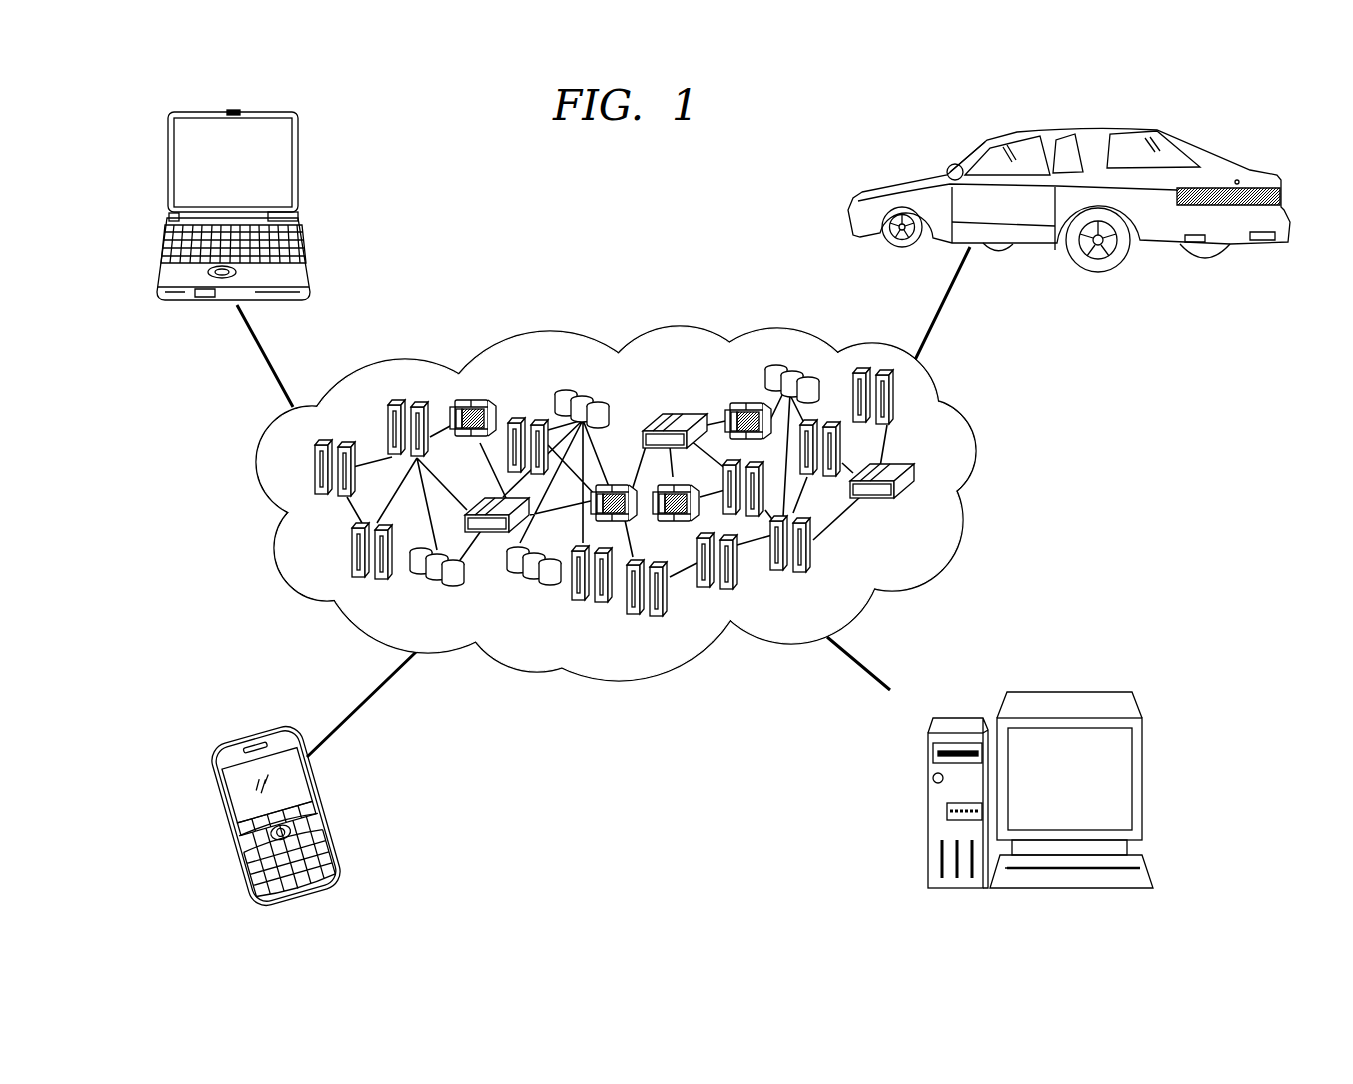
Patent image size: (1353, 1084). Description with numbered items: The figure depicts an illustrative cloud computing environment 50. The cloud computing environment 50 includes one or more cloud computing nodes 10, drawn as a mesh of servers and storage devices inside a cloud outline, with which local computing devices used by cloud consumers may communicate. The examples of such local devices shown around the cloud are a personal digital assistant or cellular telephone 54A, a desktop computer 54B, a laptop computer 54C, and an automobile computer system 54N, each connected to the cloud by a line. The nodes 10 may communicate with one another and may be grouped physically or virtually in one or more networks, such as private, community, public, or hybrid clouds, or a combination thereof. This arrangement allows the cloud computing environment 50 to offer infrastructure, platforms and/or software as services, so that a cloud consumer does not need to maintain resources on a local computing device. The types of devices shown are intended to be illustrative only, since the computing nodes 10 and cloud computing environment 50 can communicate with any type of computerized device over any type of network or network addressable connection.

The cloud computing nodes 10 is at (918, 504).
The cloud computing environment 50 is at (967, 423).
The personal digital assistant (PDA) or cellular telephone 54A is at (217, 807).
The desktop computer 54B is at (1062, 693).
The laptop computer 54C is at (168, 157).
The automobile computer system 54N is at (1252, 170).